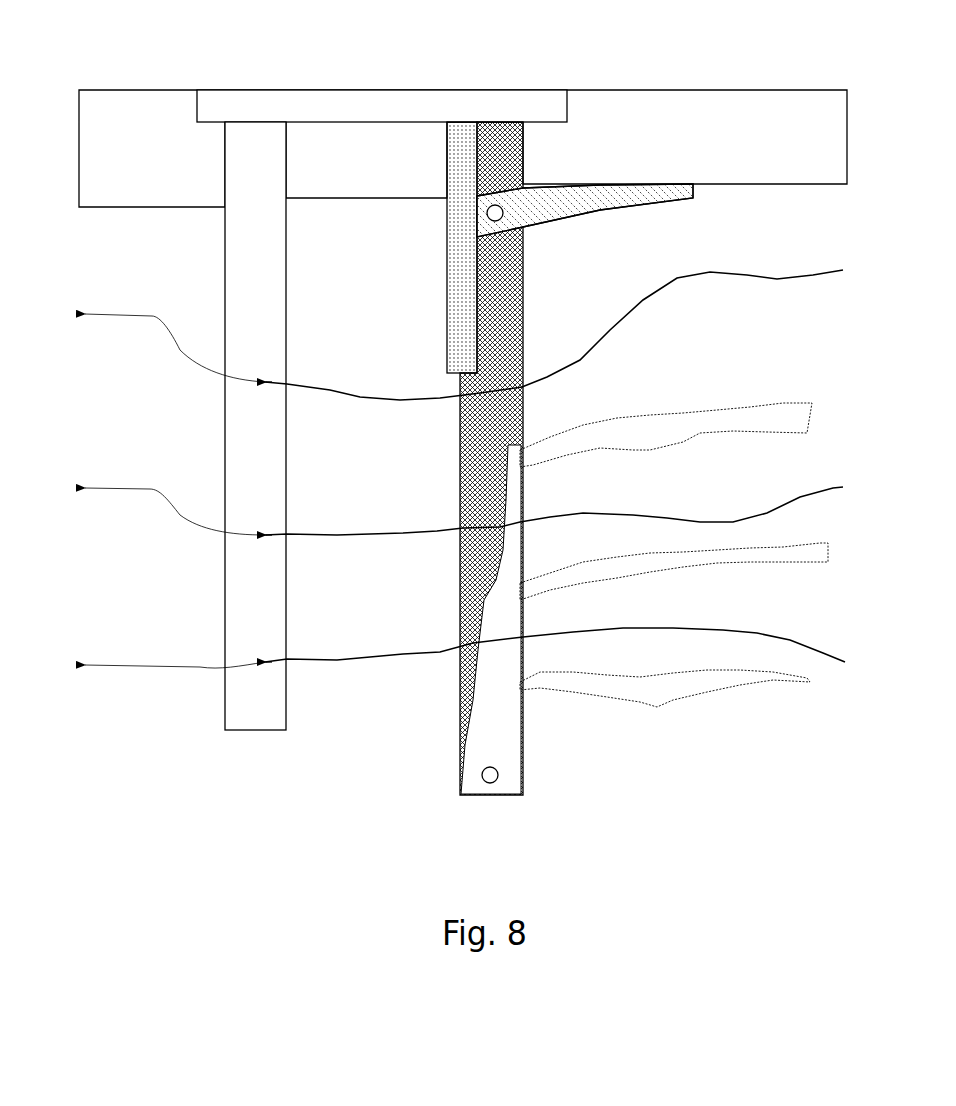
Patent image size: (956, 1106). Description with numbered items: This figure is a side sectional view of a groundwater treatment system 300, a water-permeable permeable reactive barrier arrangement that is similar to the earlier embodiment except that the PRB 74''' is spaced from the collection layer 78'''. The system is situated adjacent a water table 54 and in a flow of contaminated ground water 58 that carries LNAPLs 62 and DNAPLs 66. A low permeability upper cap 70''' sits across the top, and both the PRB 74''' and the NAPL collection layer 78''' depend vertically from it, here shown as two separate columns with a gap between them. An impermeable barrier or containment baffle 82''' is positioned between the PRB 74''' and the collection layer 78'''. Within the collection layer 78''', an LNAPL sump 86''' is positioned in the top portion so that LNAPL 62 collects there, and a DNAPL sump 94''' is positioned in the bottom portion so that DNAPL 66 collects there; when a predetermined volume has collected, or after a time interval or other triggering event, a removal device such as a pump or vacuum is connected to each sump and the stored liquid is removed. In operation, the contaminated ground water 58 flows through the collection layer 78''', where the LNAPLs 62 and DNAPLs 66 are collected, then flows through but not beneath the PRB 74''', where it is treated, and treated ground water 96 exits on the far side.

The groundwater treatment system 300 is at (436, 47).
The low permeability upper cap 70''' is at (382, 90).
The water table 54 is at (463, 163).
The PRB 74''' is at (286, 426).
The impermeable barrier or containment baffle 82''' is at (431, 247).
The NAPL collection layer 78''' is at (524, 458).
The LNAPLs 62 is at (614, 204).
The DNAPLs 66 is at (667, 418).
The LNAPL sump 86''' is at (451, 227).
The DNAPL sump 94''' is at (536, 780).
The contaminated ground water 58 is at (745, 273).
The treated ground water 96 is at (154, 324).